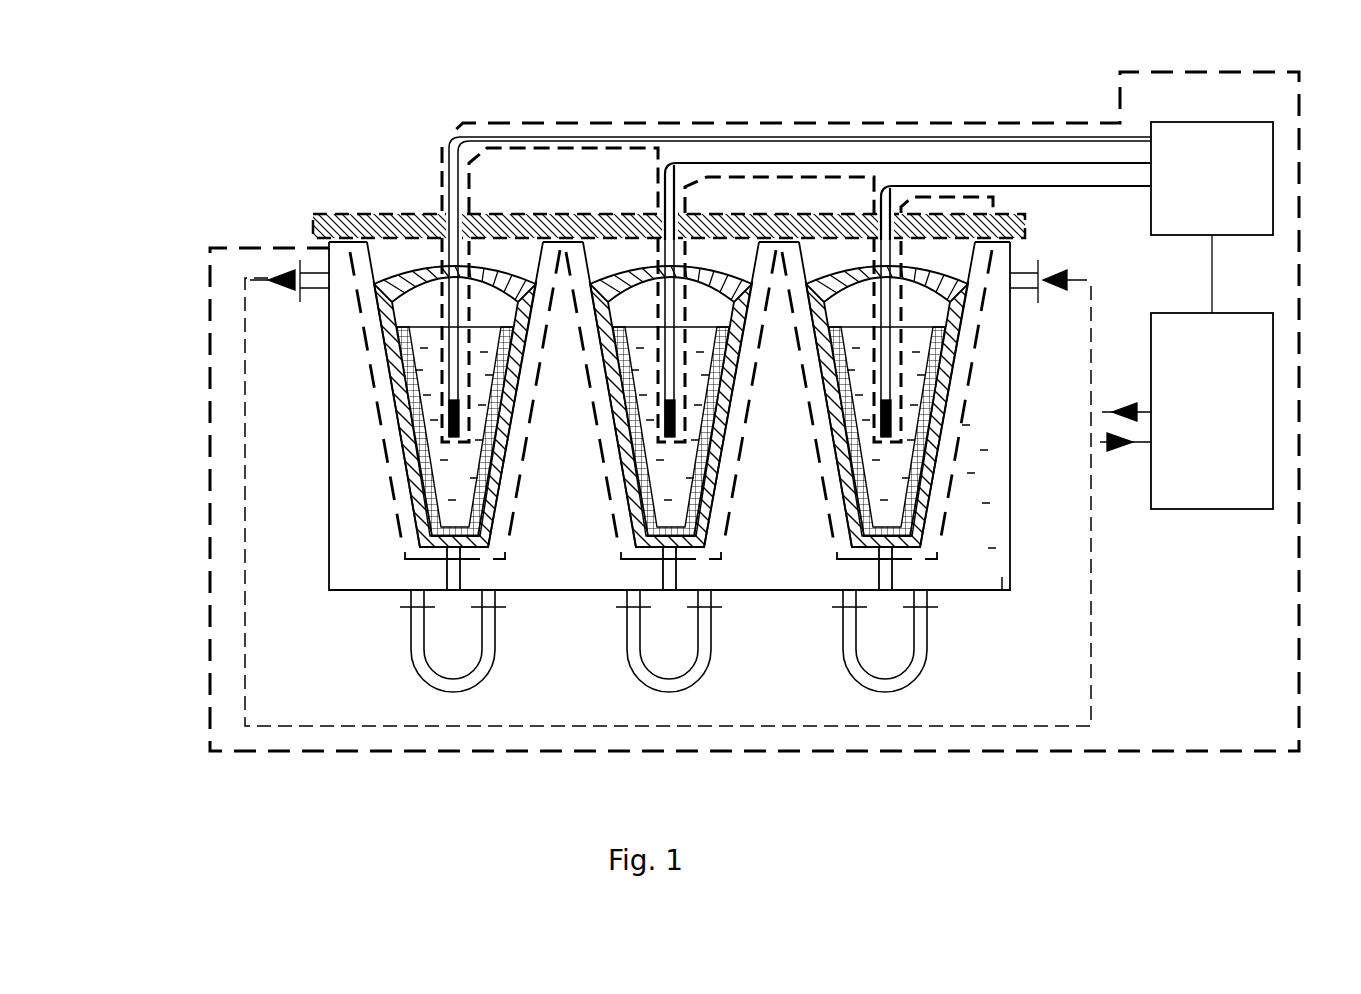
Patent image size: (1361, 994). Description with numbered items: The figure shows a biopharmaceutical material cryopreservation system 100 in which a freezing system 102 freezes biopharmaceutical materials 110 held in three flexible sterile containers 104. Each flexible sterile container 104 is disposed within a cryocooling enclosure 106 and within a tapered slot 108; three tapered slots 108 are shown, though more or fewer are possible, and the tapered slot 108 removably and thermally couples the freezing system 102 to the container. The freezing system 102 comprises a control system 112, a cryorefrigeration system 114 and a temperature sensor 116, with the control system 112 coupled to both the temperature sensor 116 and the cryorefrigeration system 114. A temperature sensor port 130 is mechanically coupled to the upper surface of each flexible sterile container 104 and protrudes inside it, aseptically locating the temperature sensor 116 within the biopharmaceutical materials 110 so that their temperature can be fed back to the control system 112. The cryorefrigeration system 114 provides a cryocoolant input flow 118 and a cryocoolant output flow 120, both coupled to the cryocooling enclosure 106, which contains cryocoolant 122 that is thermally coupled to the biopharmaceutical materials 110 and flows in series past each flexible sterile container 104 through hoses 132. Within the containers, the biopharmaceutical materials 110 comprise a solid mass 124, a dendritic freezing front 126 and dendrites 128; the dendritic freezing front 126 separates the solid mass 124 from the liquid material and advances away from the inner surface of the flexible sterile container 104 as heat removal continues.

The biopharmaceutical material cryopreservation system 100 is at (496, 802).
The freezing system 102 is at (1022, 757).
The flexible sterile container 104 is at (392, 313).
The cryocooling enclosure 106 is at (328, 410).
The tapered slot 108 is at (397, 420).
The biopharmaceutical materials 110 is at (482, 348).
The control system 112 is at (1210, 122).
The cryorefrigeration system 114 is at (1275, 385).
The temperature sensor 116 is at (460, 137).
The cryocoolant input flow 118 is at (1085, 278).
The cryocoolant output flow 120 is at (1100, 545).
The cryocoolant 122 is at (985, 568).
The solid mass 124 is at (397, 370).
The dendritic freezing front 126 is at (446, 548).
The dendrites 128 is at (432, 530).
The temperature sensor port 130 is at (445, 350).
The hoses 132 is at (455, 693).